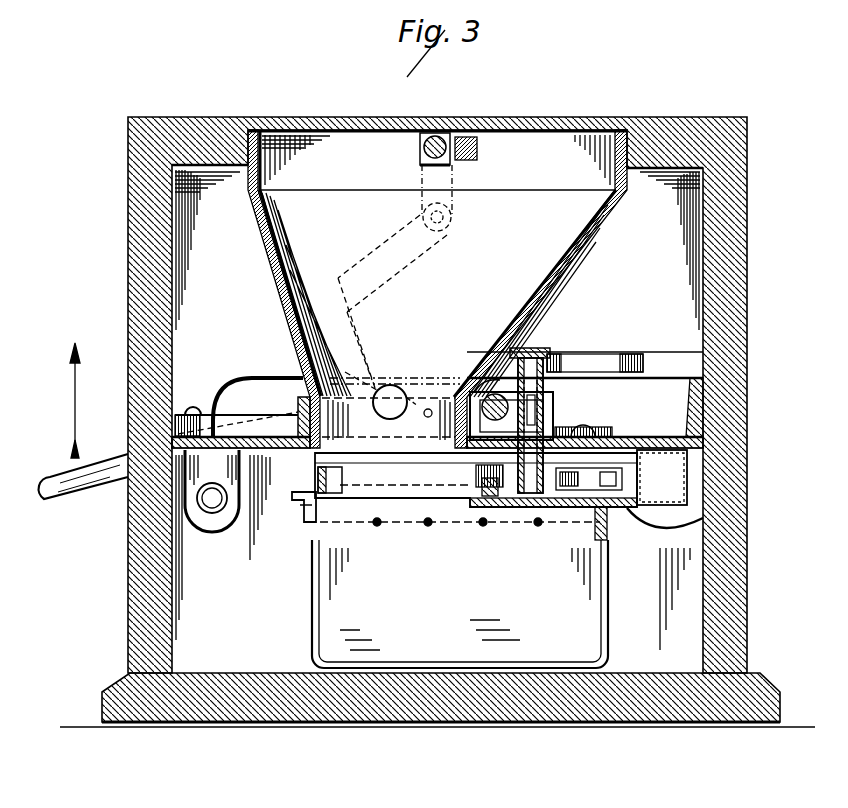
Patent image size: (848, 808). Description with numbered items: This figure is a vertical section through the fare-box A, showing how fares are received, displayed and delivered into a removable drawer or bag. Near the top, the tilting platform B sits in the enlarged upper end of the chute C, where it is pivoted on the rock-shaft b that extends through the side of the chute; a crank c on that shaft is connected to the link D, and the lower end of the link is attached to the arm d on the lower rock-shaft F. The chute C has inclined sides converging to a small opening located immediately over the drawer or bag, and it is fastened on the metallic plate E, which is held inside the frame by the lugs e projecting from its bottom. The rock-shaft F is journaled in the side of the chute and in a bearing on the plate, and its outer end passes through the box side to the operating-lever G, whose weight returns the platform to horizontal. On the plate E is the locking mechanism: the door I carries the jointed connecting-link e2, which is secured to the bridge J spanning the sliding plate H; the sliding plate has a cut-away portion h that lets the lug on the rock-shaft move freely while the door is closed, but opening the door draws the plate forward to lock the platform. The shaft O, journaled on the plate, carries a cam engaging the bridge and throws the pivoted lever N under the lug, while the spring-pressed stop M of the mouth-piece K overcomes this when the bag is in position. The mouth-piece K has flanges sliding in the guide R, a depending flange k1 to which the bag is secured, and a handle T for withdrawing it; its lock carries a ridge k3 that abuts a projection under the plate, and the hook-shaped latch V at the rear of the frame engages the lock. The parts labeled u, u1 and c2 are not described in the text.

The fare-box A is at (437, 422).
The tilting platform B is at (437, 112).
The chute C is at (626, 117).
The rock-shaft b is at (446, 150).
The crank c is at (452, 213).
The link D is at (385, 278).
The arm d is at (355, 372).
The bridge J is at (264, 378).
The sliding plate H is at (236, 419).
The metallic plate E is at (291, 414).
The door I is at (760, 445).
The rock-shaft F is at (388, 412).
The cut-away portion h is at (417, 403).
The shaft O is at (431, 421).
The jointed connecting-link e2 is at (616, 356).
The post u is at (533, 348).
The post slot u1 is at (532, 396).
The cup c2 is at (557, 400).
The spring-pressed stop M is at (572, 418).
The pivoted lever N is at (603, 428).
The ridge k3 is at (610, 437).
The mouth-piece K is at (501, 478).
The latch V is at (338, 480).
The depending flange k1 is at (460, 524).
The guide R is at (300, 524).
The handle T is at (648, 532).
The lugs e is at (212, 491).
The operating-lever G is at (83, 421).